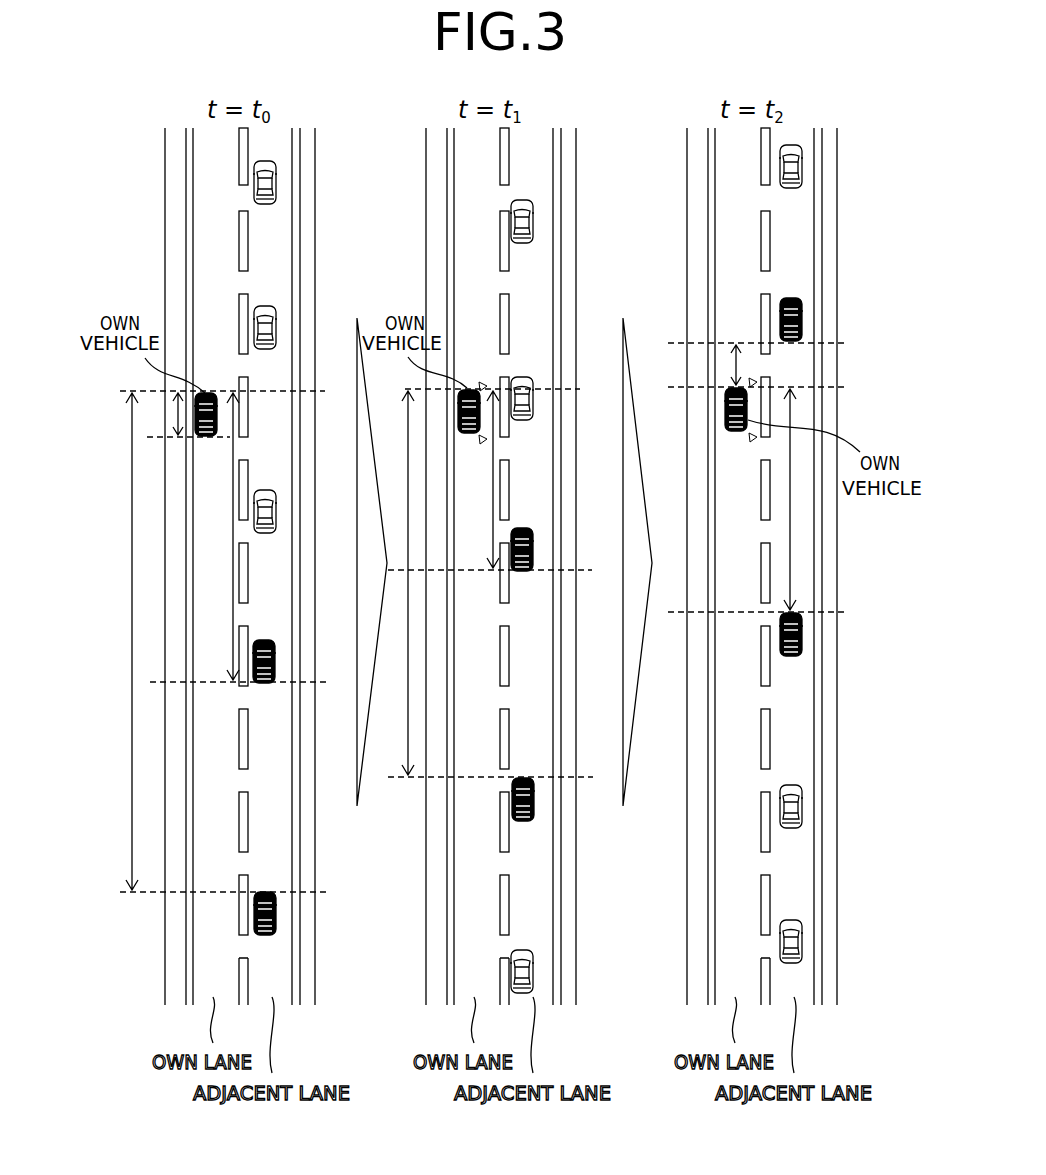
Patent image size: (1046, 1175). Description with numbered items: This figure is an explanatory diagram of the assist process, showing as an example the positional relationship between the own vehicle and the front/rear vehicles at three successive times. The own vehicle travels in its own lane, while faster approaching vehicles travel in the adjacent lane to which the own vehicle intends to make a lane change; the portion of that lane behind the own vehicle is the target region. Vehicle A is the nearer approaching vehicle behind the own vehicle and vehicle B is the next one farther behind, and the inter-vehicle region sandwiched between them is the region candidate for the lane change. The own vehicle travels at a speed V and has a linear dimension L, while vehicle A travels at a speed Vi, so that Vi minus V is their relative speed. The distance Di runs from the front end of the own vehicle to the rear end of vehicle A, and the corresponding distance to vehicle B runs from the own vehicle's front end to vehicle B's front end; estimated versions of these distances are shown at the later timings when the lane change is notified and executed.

The traveling speed of the own vehicle V is at (475, 423).
The traveling speed of the vehicle A Vi is at (561, 480).
The linear dimension of the own vehicle L is at (163, 414).
The distance from front end of own vehicle to rear end of vehicle A Di is at (470, 512).